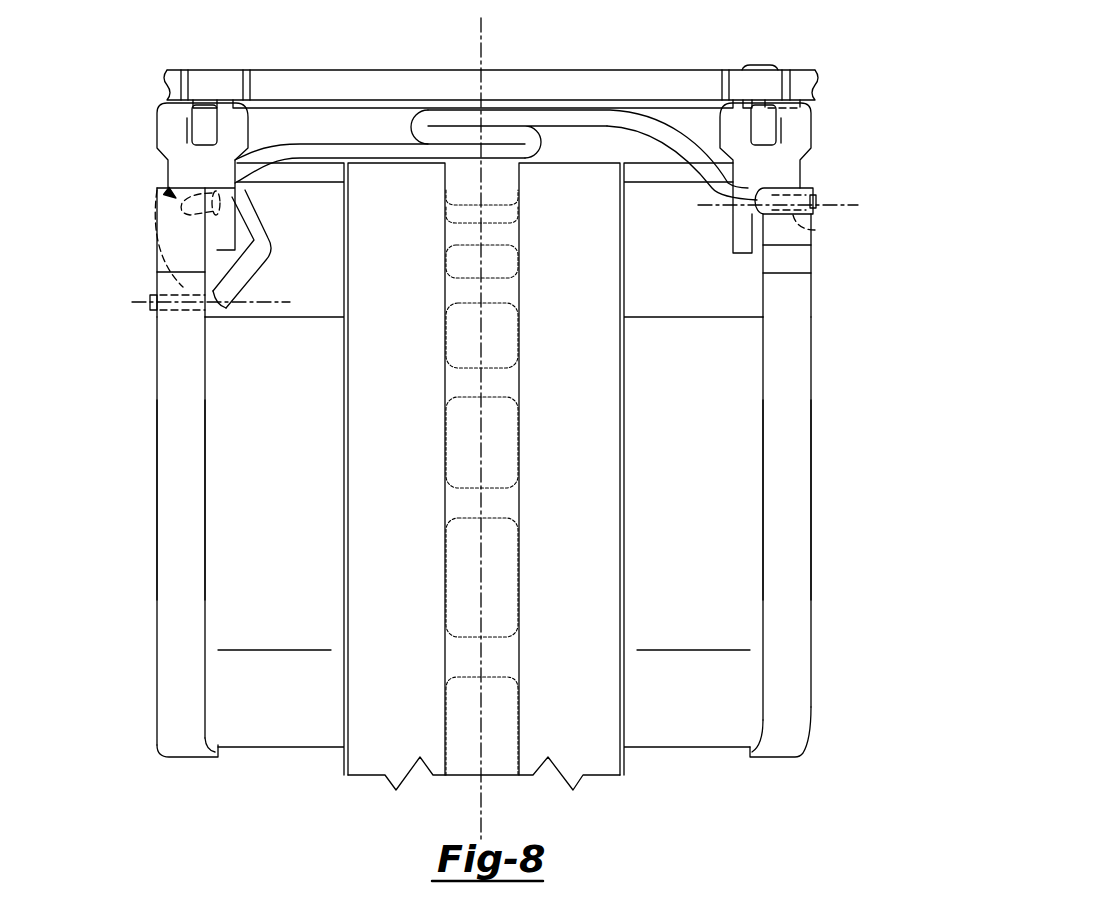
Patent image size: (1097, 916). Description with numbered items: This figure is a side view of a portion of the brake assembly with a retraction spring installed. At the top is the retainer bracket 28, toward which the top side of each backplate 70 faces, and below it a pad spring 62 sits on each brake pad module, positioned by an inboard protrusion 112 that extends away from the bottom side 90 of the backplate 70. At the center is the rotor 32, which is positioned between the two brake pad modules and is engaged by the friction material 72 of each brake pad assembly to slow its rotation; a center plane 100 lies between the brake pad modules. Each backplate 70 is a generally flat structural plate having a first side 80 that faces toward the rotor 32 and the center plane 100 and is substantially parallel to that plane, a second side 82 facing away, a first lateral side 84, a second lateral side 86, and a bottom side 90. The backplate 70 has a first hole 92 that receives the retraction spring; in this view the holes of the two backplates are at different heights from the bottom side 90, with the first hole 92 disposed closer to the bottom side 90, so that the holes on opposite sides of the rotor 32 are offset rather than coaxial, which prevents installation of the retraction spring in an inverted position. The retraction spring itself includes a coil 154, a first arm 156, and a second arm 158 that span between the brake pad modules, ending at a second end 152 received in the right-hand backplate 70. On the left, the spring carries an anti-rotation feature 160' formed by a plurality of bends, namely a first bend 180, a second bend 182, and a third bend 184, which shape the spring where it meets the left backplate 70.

The retainer bracket 28 is at (670, 70).
The rotor 32 is at (430, 750).
The pad spring 62 is at (160, 125).
The backplate 70 is at (167, 323).
The friction material 72 is at (283, 440).
The first side 80 is at (205, 527).
The second side 82 is at (157, 512).
The first lateral side 84 is at (177, 407).
The second lateral side 86 is at (793, 435).
The bottom side 90 is at (183, 287).
The first hole 92 is at (815, 230).
The center plane 100 is at (481, 57).
The inboard protrusion 112 is at (205, 108).
The second end 152 is at (817, 203).
The coil 154 is at (464, 115).
The first arm 156 is at (360, 140).
The second arm 158 is at (628, 110).
The anti-rotation feature 160' is at (121, 166).
The first bend 180 is at (220, 300).
The second bend 182 is at (263, 253).
The third bend 184 is at (165, 212).